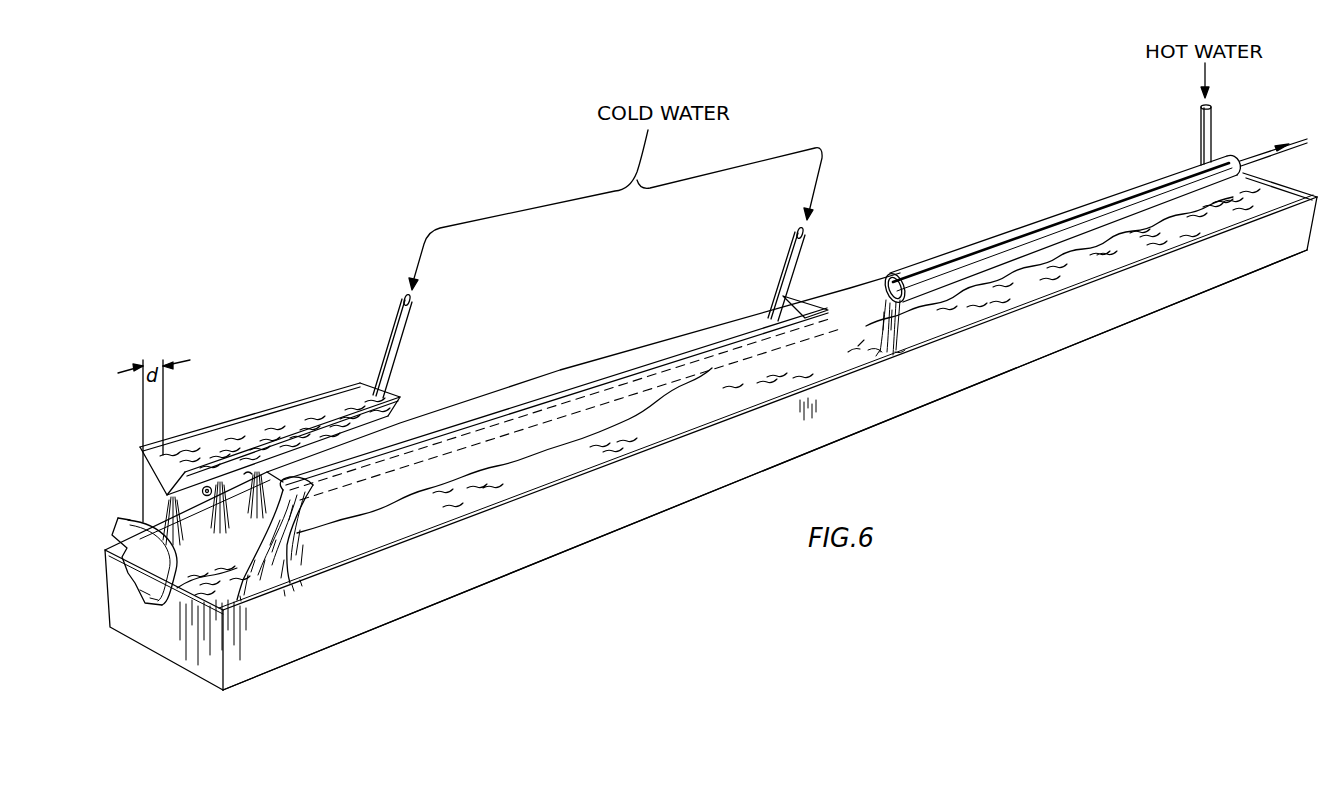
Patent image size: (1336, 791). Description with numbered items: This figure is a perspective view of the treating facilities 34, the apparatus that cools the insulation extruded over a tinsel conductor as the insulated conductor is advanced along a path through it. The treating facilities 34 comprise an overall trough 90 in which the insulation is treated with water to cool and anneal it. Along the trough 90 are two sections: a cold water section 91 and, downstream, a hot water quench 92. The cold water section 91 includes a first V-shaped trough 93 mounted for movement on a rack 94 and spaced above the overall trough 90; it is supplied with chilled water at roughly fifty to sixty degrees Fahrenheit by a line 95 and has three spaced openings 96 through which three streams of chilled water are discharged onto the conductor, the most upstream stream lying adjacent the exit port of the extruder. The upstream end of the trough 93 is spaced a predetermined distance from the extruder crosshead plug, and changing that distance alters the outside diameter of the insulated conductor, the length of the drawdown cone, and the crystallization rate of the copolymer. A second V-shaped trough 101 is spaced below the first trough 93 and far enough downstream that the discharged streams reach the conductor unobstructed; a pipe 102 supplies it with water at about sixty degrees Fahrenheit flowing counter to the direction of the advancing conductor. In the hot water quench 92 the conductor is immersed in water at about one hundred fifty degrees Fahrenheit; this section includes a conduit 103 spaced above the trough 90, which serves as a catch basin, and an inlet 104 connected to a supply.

The treating facilities 34 is at (488, 618).
The trough 90 is at (280, 665).
The cold water section 91 is at (634, 292).
The hot water quench 92 is at (1053, 200).
The first V-shaped trough 93 is at (228, 427).
The rack 94 is at (258, 470).
The line 95 is at (394, 328).
The spaced openings 96 is at (250, 478).
The second V-shaped trough 101 is at (583, 370).
The pipe 102 is at (782, 275).
The conduit 103 is at (950, 258).
The inlet 104 is at (1200, 124).